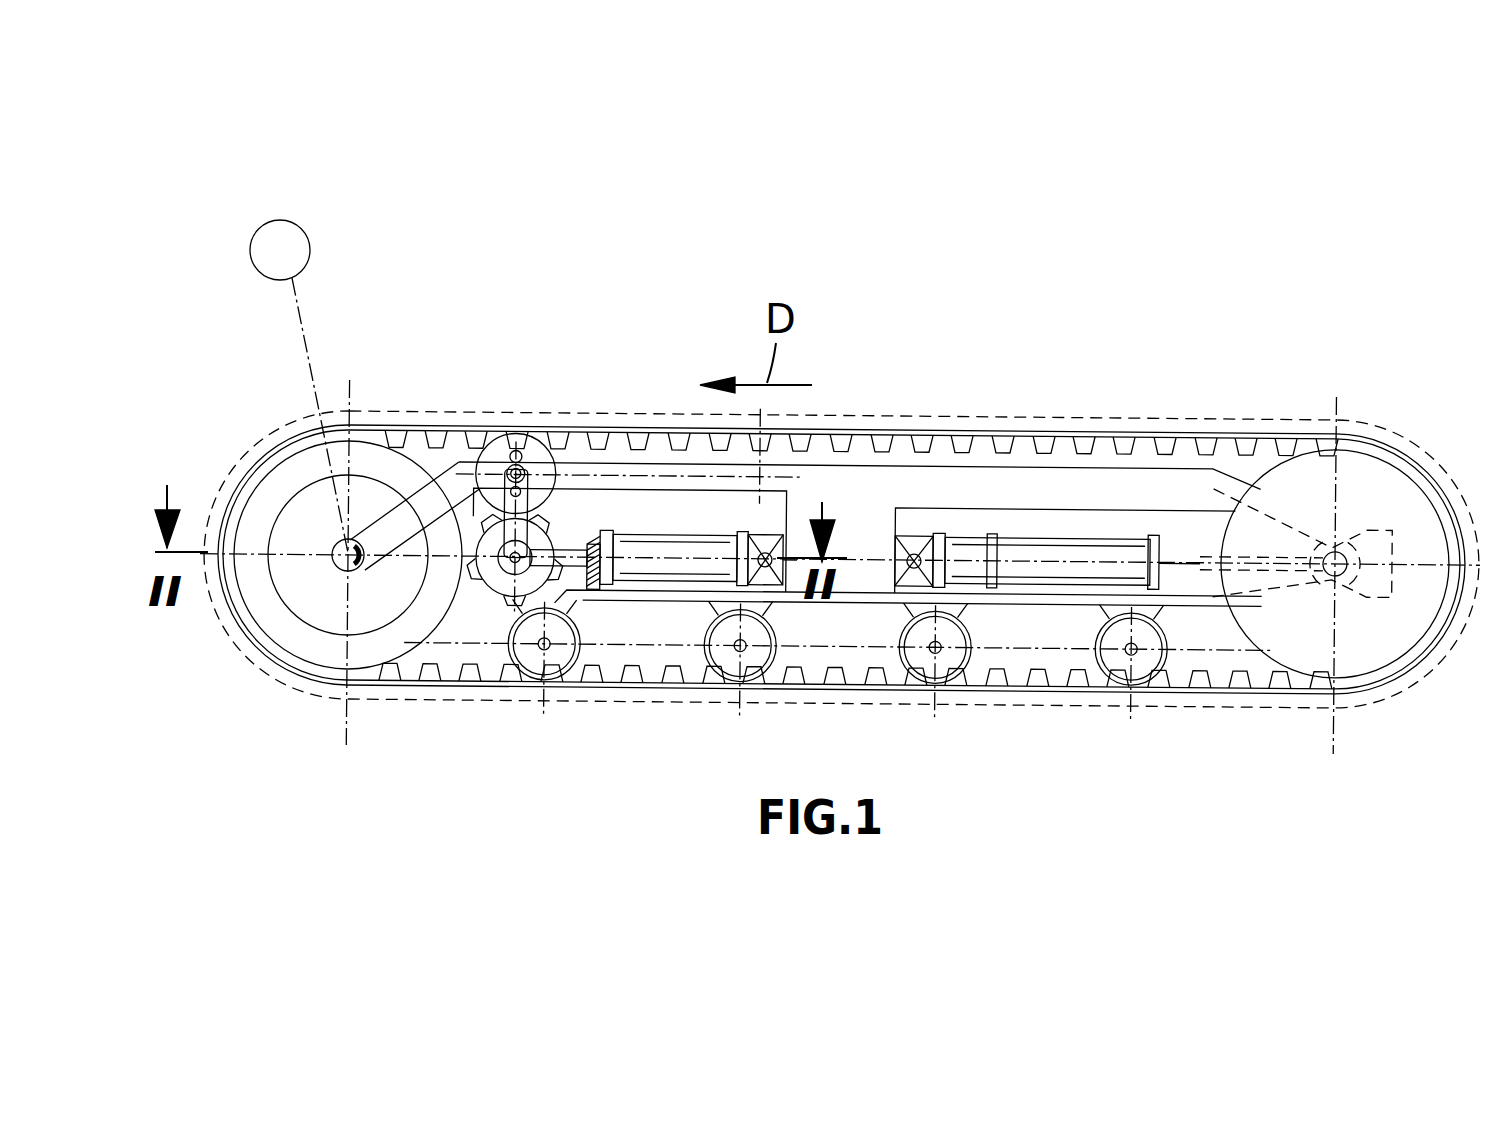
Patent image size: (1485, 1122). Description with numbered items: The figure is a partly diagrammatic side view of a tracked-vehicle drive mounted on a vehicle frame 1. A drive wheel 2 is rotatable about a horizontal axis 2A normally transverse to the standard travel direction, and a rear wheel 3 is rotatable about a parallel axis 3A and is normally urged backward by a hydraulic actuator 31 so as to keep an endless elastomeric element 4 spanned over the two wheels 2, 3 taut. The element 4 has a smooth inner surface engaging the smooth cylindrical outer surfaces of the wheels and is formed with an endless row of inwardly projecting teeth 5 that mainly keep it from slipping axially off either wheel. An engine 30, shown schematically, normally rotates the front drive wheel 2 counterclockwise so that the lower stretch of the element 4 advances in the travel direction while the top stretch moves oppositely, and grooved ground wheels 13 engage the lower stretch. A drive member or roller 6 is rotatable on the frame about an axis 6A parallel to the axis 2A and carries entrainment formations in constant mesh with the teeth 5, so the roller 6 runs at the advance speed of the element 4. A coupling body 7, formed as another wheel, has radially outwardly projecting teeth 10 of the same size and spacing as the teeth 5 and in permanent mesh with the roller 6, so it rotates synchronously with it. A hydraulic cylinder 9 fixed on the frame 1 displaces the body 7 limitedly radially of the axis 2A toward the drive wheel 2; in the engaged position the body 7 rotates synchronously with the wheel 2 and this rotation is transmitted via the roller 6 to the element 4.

The vehicle frame 1 is at (848, 500).
The drive wheel 2 is at (290, 445).
The horizontal axis 2A is at (345, 560).
The rear wheel 3 is at (1360, 652).
The parallel axis 3A is at (1340, 558).
The endless elastomeric element 4 is at (988, 437).
The teeth 5 is at (1093, 445).
The drive member or roller 6 is at (540, 440).
The axis 6A is at (507, 447).
The coupling body 7 is at (452, 462).
The hydraulic cylinder 9 is at (662, 578).
The teeth 10 is at (543, 517).
The grooved ground wheels 13 is at (552, 668).
The engine 30 is at (262, 235).
The hydraulic actuator 31 is at (1061, 524).